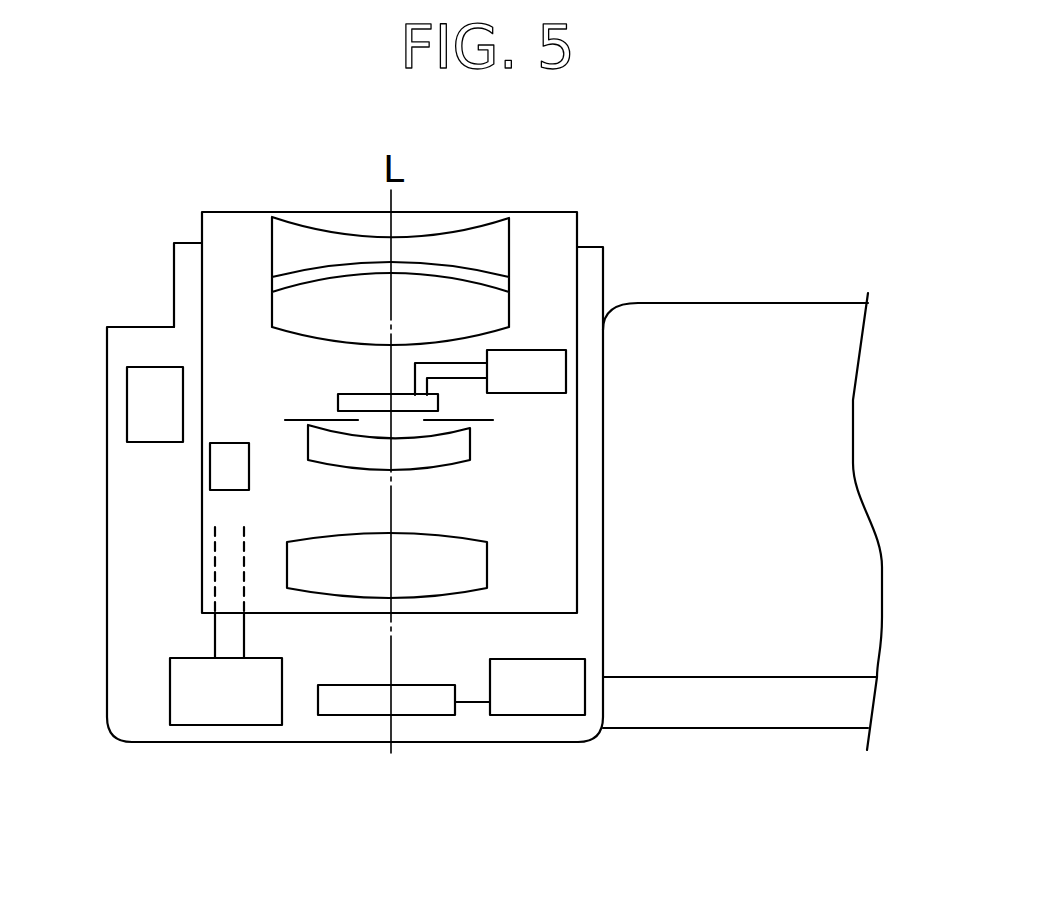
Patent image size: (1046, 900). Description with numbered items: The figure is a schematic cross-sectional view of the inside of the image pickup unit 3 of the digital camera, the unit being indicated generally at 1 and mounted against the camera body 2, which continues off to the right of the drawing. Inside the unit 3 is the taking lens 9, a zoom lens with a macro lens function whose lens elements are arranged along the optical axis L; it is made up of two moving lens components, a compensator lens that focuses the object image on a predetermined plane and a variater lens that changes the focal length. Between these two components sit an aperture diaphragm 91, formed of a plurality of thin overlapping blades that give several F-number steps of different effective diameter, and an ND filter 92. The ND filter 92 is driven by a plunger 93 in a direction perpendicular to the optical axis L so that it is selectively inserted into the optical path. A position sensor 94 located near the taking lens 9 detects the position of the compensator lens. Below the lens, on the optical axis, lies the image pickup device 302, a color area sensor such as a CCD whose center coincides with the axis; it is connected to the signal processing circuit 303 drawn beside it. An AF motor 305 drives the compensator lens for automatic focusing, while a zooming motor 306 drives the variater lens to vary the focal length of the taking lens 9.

The camera 1 is at (598, 215).
The camera body 2 is at (707, 303).
The image pickup unit 3 is at (460, 212).
The taking lens 9 is at (318, 388).
The aperture diaphragm 91 is at (477, 421).
The ND filter 92 is at (438, 400).
The plunger 93 is at (547, 363).
The position sensor 94 is at (224, 450).
The image pickup device 302 is at (352, 713).
The signal processing circuit 303 is at (540, 705).
The AF motor 305 is at (237, 715).
The zooming motor 306 is at (143, 402).